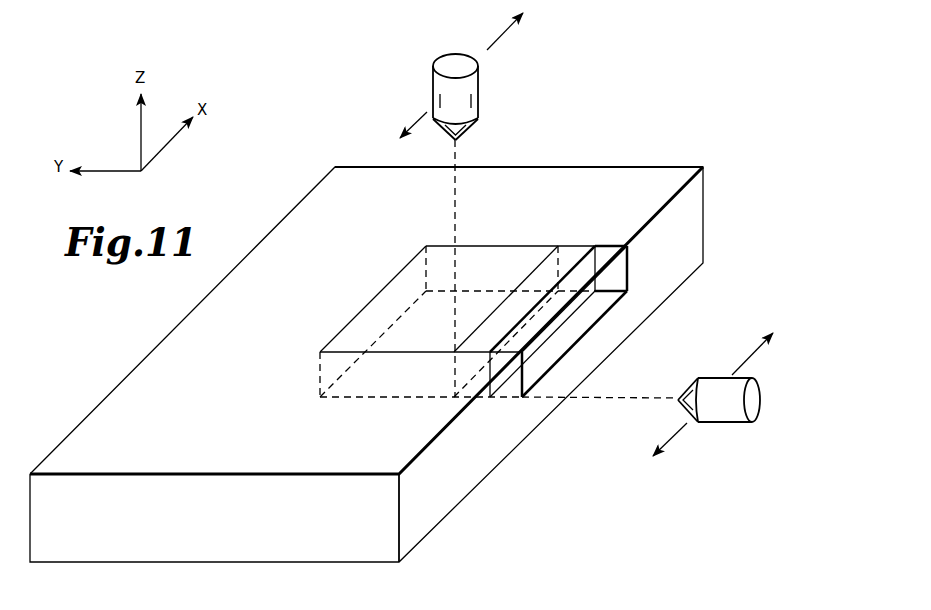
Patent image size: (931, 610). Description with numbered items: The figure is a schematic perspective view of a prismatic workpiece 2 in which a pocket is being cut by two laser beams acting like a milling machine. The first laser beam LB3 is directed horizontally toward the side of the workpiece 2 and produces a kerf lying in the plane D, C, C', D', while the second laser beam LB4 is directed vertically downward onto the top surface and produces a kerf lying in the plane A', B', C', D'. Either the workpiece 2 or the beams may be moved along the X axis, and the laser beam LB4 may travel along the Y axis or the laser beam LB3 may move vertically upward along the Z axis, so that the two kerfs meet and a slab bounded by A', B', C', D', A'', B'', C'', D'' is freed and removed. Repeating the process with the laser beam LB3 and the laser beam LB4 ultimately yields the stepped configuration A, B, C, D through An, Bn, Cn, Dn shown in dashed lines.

The workpiece substrate 2 is at (289, 311).
The laser beam LB3 is at (735, 413).
The laser beam LB4 is at (478, 97).